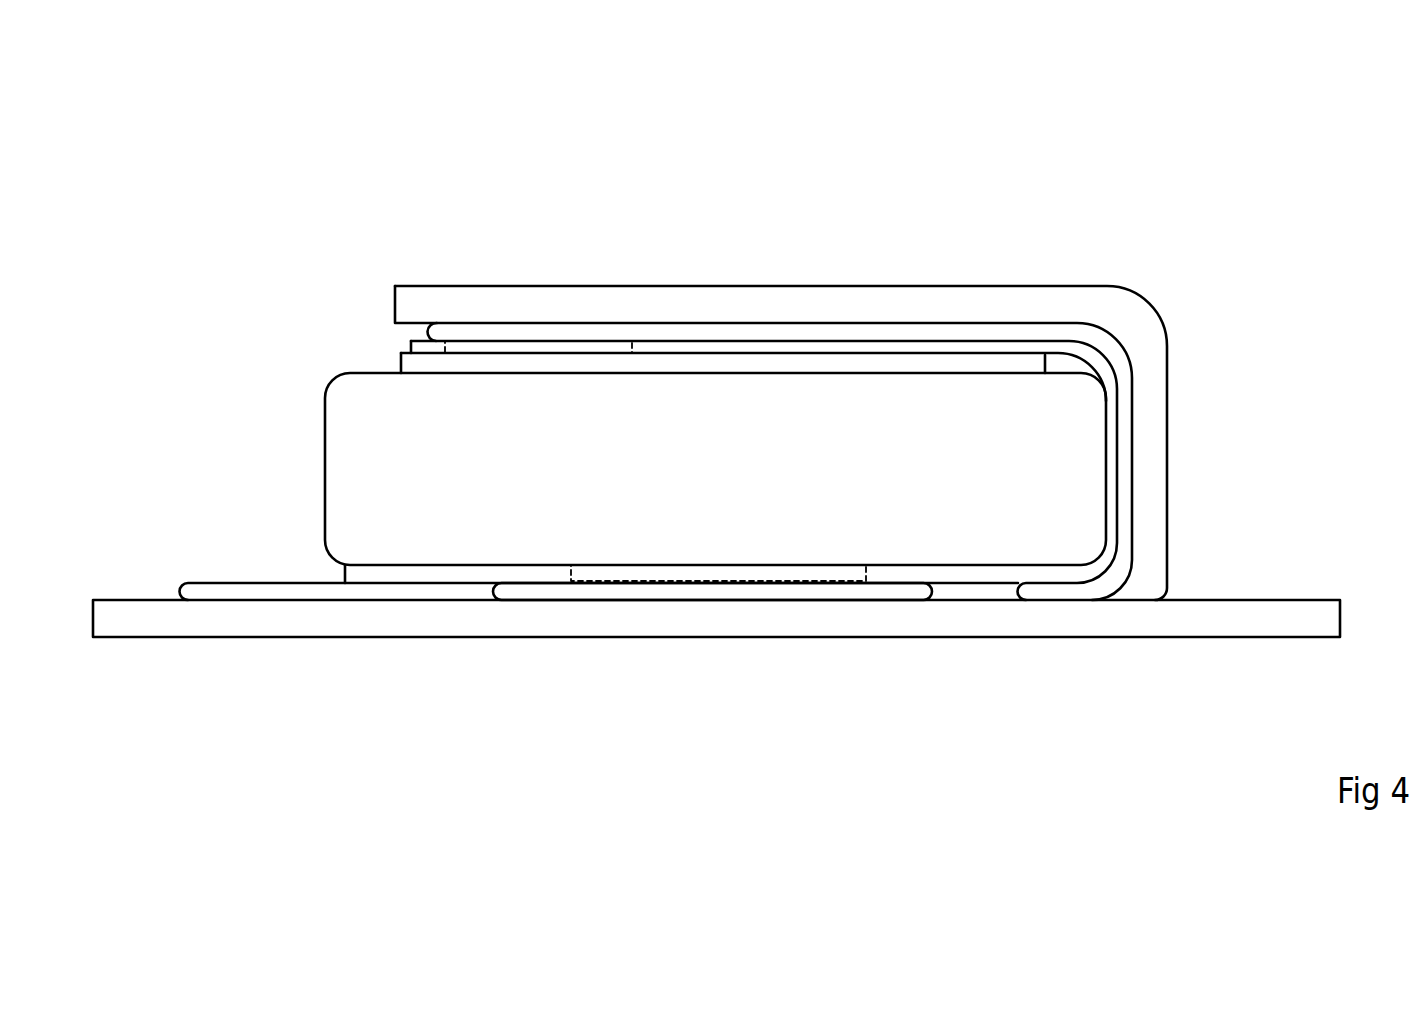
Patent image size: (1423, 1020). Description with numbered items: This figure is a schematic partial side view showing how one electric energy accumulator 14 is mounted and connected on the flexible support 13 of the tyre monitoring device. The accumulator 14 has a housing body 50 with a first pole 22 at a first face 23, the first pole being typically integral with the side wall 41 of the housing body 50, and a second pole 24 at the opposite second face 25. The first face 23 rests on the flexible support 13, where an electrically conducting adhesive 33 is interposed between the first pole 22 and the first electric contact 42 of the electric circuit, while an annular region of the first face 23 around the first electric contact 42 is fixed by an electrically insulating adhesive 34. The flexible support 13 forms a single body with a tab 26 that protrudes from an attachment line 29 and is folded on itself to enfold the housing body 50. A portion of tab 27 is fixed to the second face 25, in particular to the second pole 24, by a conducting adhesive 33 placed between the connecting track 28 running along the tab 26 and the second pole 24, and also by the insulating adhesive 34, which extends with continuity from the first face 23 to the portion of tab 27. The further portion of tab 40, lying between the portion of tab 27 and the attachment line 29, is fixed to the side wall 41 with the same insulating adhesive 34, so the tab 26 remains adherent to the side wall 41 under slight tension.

The flexible support 13 is at (852, 620).
The electric energy accumulator 14 is at (280, 462).
The first pole 22 is at (478, 565).
The first face 23 is at (540, 593).
The second pole 24 is at (892, 367).
The second face 25 is at (875, 326).
The tab 26 is at (762, 312).
The portion of tab 27 is at (733, 262).
The connecting track 28 is at (1042, 332).
The attachment line 29 is at (1190, 578).
The electrically conducting adhesive 33 is at (512, 347).
The electrically insulating adhesive 34 is at (697, 348).
The further portion of tab 40 is at (1212, 421).
The side wall 41 is at (750, 487).
The first electric contact 42 is at (738, 590).
The housing body 50 is at (388, 452).